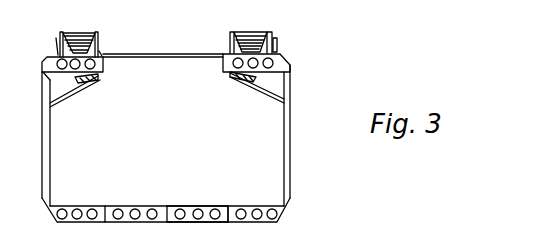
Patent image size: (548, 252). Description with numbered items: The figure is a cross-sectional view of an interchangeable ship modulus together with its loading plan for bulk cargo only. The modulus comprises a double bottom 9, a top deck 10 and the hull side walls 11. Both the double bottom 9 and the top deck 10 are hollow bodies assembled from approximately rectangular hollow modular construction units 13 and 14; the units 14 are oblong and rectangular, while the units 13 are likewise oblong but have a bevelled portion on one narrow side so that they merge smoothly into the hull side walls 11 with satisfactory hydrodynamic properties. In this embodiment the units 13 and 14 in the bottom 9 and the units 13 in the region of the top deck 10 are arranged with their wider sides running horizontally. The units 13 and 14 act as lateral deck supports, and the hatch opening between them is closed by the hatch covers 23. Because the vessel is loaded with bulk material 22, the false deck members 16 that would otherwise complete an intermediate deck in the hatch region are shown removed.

The double bottom 9 is at (236, 224).
The top deck 10 is at (278, 37).
The hull side wall 11 is at (286, 136).
The hollow modular construction unit 13 is at (290, 62).
The hollow modular construction unit 14 is at (188, 223).
The false deck member 16 is at (88, 35).
The bulk material 22 is at (180, 137).
The hatch cover 23 is at (143, 56).